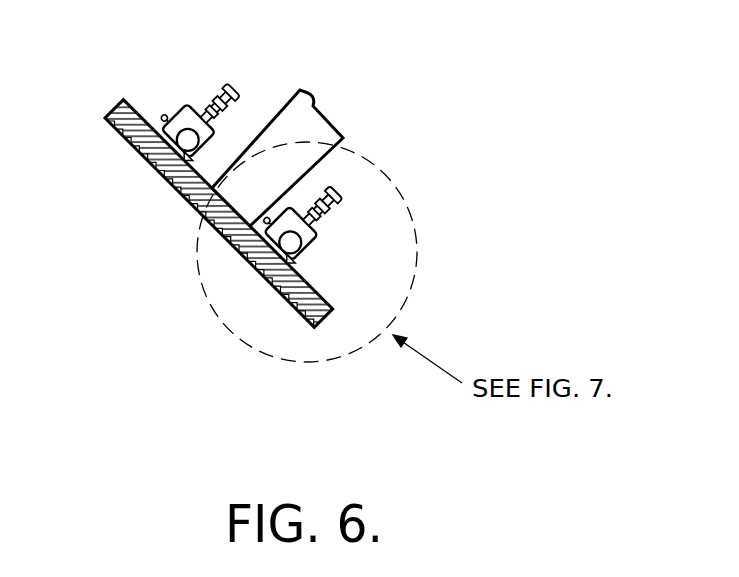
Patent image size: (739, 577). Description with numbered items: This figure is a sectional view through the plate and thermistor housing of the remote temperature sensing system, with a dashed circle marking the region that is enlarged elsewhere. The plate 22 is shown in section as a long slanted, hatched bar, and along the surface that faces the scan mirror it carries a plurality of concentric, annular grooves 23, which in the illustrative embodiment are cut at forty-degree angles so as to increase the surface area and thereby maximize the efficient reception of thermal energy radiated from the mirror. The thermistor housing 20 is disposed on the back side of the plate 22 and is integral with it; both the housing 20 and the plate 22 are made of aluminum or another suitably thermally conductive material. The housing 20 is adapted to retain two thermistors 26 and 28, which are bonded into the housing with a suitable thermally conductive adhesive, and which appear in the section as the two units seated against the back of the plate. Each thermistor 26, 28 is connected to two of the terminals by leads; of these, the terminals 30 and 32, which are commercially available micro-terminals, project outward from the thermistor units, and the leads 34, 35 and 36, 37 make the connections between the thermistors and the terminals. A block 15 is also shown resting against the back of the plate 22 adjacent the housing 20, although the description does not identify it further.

The workpiece block 15 is at (313, 108).
The thermistor housing 20 is at (328, 241).
The plate 22 is at (116, 109).
The concentric annular grooves 23 is at (207, 239).
The thermistor 26 is at (163, 168).
The thermistor 28 is at (267, 276).
The terminal 30 is at (236, 107).
The terminal 32 is at (335, 190).
The lead 34 is at (175, 103).
The lead 35 is at (175, 103).
The lead 36 is at (328, 241).
The lead 37 is at (328, 241).